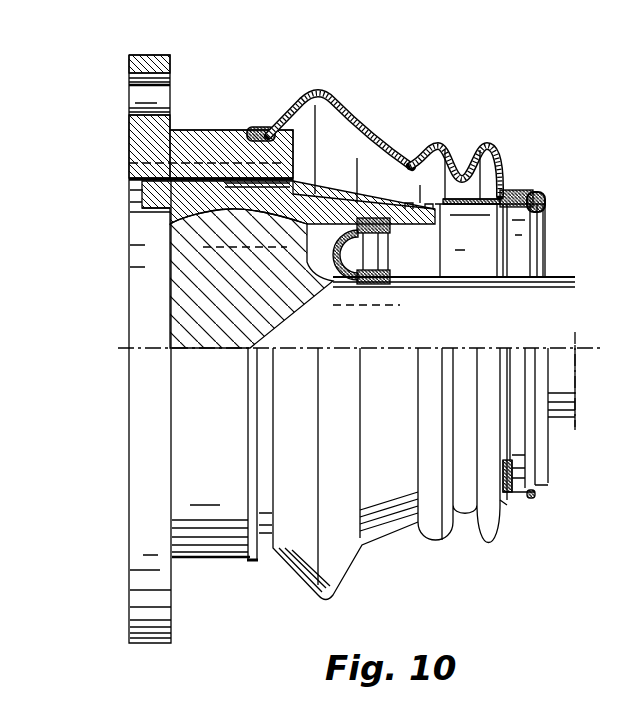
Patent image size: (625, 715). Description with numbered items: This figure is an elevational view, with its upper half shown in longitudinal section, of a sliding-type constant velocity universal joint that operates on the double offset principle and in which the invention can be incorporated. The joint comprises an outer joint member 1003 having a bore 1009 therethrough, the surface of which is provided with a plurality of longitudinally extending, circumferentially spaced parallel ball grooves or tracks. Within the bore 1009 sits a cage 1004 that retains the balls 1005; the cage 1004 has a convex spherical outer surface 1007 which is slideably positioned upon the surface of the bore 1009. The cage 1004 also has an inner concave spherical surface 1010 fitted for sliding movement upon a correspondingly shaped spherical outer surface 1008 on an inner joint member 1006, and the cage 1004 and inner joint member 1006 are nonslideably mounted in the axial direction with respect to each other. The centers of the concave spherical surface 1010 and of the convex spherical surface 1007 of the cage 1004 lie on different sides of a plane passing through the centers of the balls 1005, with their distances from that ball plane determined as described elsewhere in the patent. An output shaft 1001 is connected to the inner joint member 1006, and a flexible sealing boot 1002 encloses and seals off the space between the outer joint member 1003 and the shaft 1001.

The output shaft 1001 is at (541, 316).
The flexible sealing boot 1002 is at (445, 150).
The outer joint member 1003 is at (147, 153).
The cage 1004 is at (128, 178).
The balls 1005 is at (222, 160).
The inner joint member 1006 is at (202, 268).
The spherical outer surface of the cage 1007 is at (126, 102).
The spherical outer surface of the inner joint member 1008 is at (258, 205).
The bore 1009 is at (288, 232).
The inner concave spherical surface of the cage 1010 is at (358, 217).